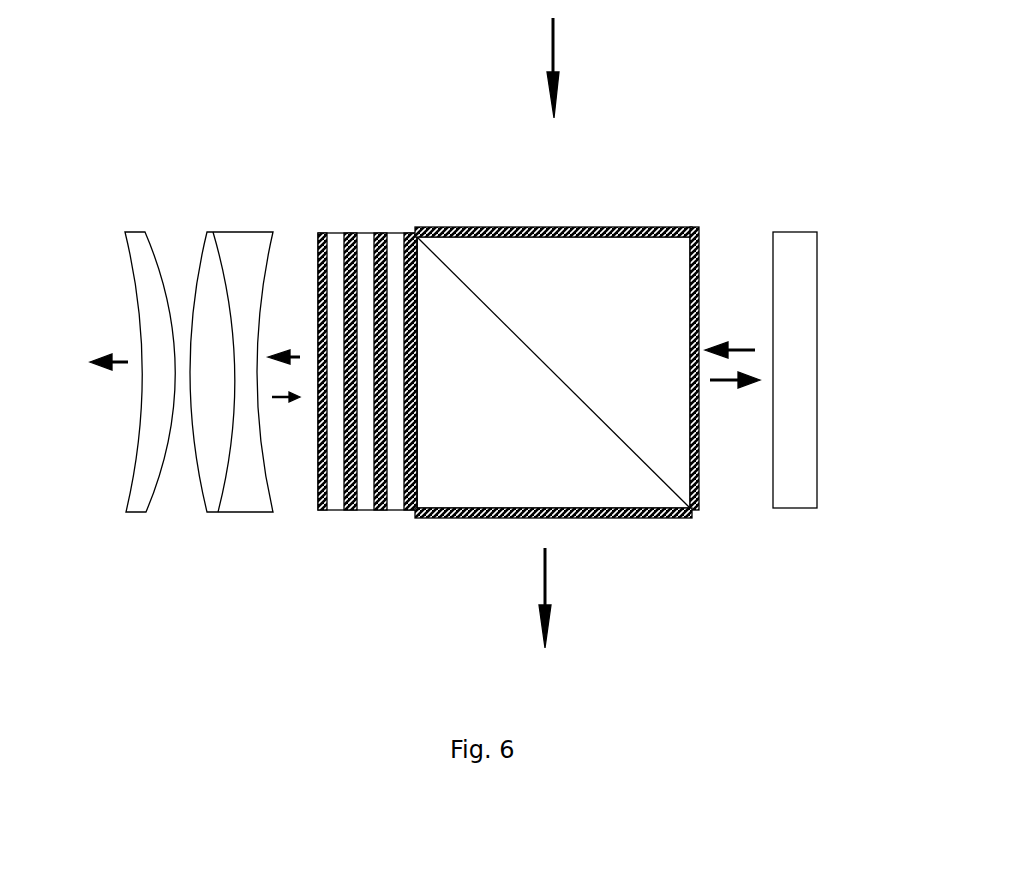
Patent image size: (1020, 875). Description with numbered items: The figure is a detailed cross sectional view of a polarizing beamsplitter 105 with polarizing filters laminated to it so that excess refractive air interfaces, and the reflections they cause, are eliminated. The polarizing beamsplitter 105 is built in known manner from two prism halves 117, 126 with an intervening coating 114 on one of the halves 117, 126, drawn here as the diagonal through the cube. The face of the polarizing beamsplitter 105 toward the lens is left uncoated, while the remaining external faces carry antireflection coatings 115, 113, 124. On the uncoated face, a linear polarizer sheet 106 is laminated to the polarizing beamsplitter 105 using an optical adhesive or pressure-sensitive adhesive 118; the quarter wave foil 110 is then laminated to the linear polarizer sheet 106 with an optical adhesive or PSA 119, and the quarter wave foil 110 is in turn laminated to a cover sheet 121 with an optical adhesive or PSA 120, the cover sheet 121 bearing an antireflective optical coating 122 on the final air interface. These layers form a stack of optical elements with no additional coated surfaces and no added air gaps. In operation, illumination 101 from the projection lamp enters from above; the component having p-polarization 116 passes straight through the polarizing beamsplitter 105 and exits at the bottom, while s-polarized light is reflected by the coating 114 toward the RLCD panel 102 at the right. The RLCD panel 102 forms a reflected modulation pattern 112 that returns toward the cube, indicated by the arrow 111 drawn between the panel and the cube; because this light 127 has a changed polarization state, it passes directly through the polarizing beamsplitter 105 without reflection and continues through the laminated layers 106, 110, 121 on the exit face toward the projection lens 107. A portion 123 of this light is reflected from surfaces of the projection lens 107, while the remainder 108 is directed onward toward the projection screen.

The illumination 101 is at (553, 57).
The RLCD panel 102 is at (808, 260).
The polarizing beamsplitter 105 is at (650, 488).
The linear polarizer sheet 106 is at (398, 507).
The projection lens 107 is at (237, 513).
The remainder of light 108 is at (118, 368).
The quarter wave foil 110 is at (372, 507).
The light reflected from light valve 111 is at (730, 383).
The reflected modulation pattern 112 is at (737, 347).
The antireflection coating 113 is at (700, 480).
The intervening coating 114 is at (433, 247).
The antireflection coating 115 is at (550, 520).
The p-polarization 116 is at (548, 598).
The PBS-half prism 117 is at (492, 243).
The optical adhesive or pressure-sensitive adhesive 118 is at (409, 236).
The optical adhesive or PSA 119 is at (382, 236).
The optical adhesive or PSA 120 is at (350, 236).
The cover sheet 121 is at (337, 512).
The antireflective optical coating 122 is at (322, 512).
The reflected portion of light 123 is at (287, 400).
The antireflection coating 124 is at (598, 227).
The prism half 126 is at (625, 242).
The modulated light 127 is at (288, 348).